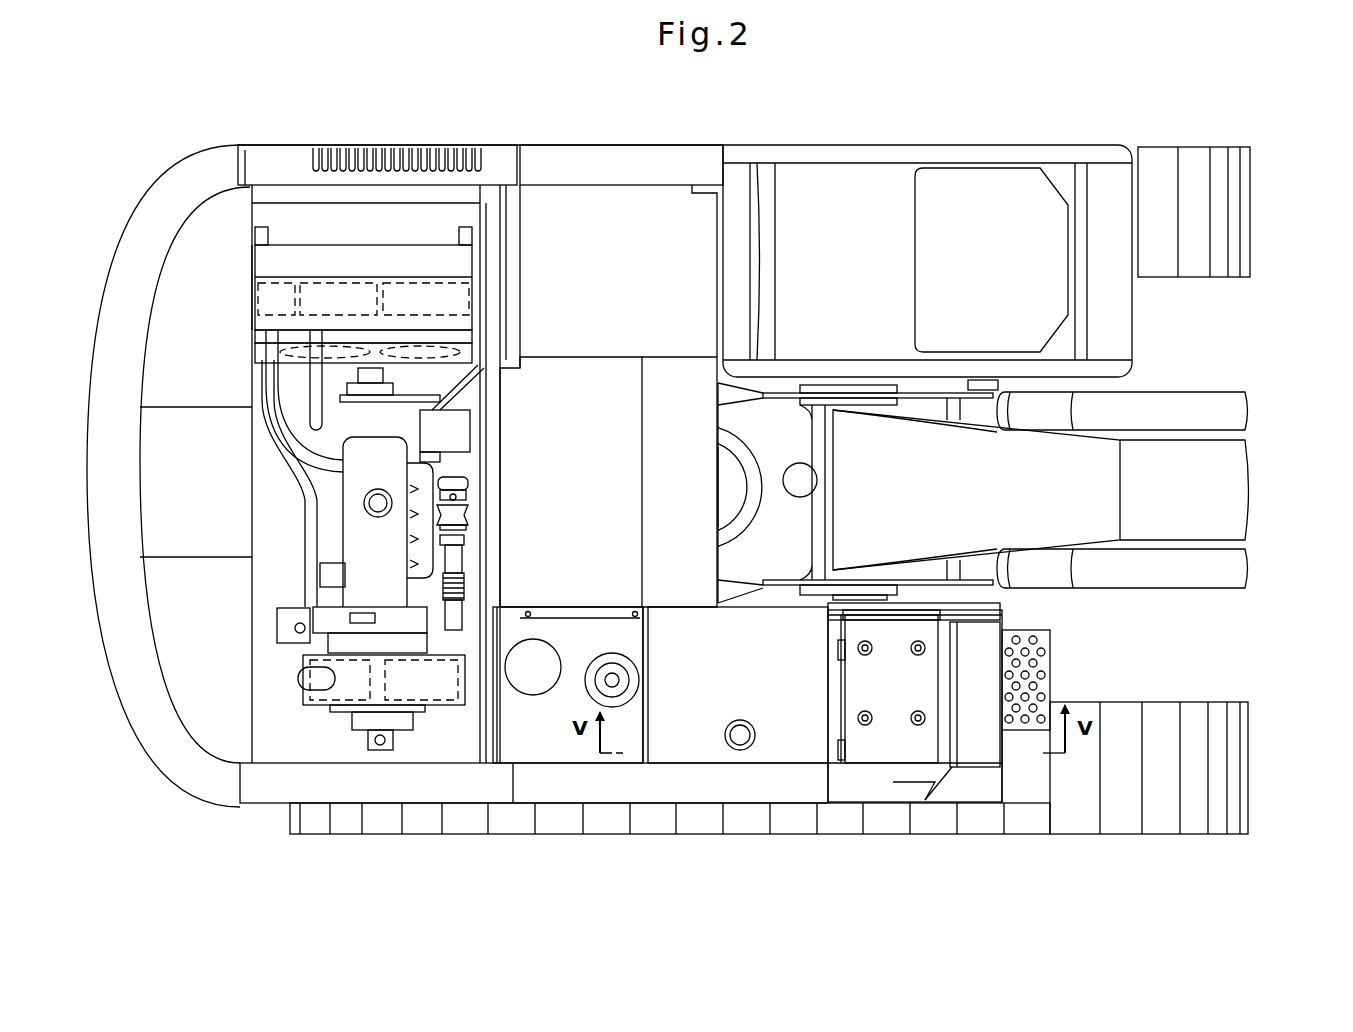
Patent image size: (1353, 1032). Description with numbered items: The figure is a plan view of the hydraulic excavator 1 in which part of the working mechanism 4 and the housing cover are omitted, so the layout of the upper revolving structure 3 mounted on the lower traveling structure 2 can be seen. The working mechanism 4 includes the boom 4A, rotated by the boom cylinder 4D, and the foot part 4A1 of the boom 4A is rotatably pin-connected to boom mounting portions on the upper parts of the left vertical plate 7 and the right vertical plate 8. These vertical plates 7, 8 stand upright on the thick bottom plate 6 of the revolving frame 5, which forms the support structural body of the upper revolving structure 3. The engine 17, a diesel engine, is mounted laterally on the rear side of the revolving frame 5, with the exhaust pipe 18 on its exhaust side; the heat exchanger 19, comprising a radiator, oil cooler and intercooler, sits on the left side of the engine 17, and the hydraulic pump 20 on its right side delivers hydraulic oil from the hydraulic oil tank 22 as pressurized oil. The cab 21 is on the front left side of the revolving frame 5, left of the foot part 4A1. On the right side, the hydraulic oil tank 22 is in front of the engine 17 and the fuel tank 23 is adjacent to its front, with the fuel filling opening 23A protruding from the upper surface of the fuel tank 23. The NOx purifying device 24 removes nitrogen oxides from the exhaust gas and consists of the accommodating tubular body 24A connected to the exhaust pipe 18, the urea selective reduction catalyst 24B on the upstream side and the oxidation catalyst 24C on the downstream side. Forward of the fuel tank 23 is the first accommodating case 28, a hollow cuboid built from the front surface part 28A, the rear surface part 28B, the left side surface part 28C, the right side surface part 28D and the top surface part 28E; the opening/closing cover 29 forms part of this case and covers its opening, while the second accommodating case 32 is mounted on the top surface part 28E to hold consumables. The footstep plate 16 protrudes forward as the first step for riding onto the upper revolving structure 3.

The hydraulic excavator 1 is at (637, 125).
The lower traveling structure 2 is at (1193, 173).
The upper revolving structure 3 is at (601, 140).
The working mechanism 4 is at (1076, 490).
The boom 4A is at (1228, 512).
The foot part 4A1 is at (900, 440).
The boom cylinder 4D is at (1228, 410).
The revolving frame 5 is at (847, 385).
The bottom plate 6 is at (793, 413).
The left vertical plate 7 is at (940, 397).
The right vertical plate 8 is at (948, 583).
The footstep plate 16 is at (1042, 688).
The engine 17 is at (353, 517).
The exhaust pipe 18 is at (453, 560).
The heat exchanger 19 is at (345, 300).
The hydraulic pump 20 is at (380, 750).
The cab 21 is at (985, 173).
The hydraulic oil tank 22 is at (565, 745).
The fuel tank 23 is at (735, 773).
The fuel filling opening 23A is at (740, 745).
The NOx purifying device 24 is at (351, 797).
The accommodating tubular body 24A is at (313, 705).
The urea selective reduction catalyst 24B is at (437, 687).
The oxidation catalyst 24C is at (330, 705).
The first accommodating case 28 is at (942, 717).
The front surface part 28A is at (1002, 760).
The rear surface part 28B is at (828, 672).
The left side surface part 28C is at (920, 610).
The right side surface part 28D is at (962, 800).
The top surface part 28E is at (950, 782).
The opening/closing cover 29 is at (970, 665).
The second accommodating case 32 is at (875, 738).